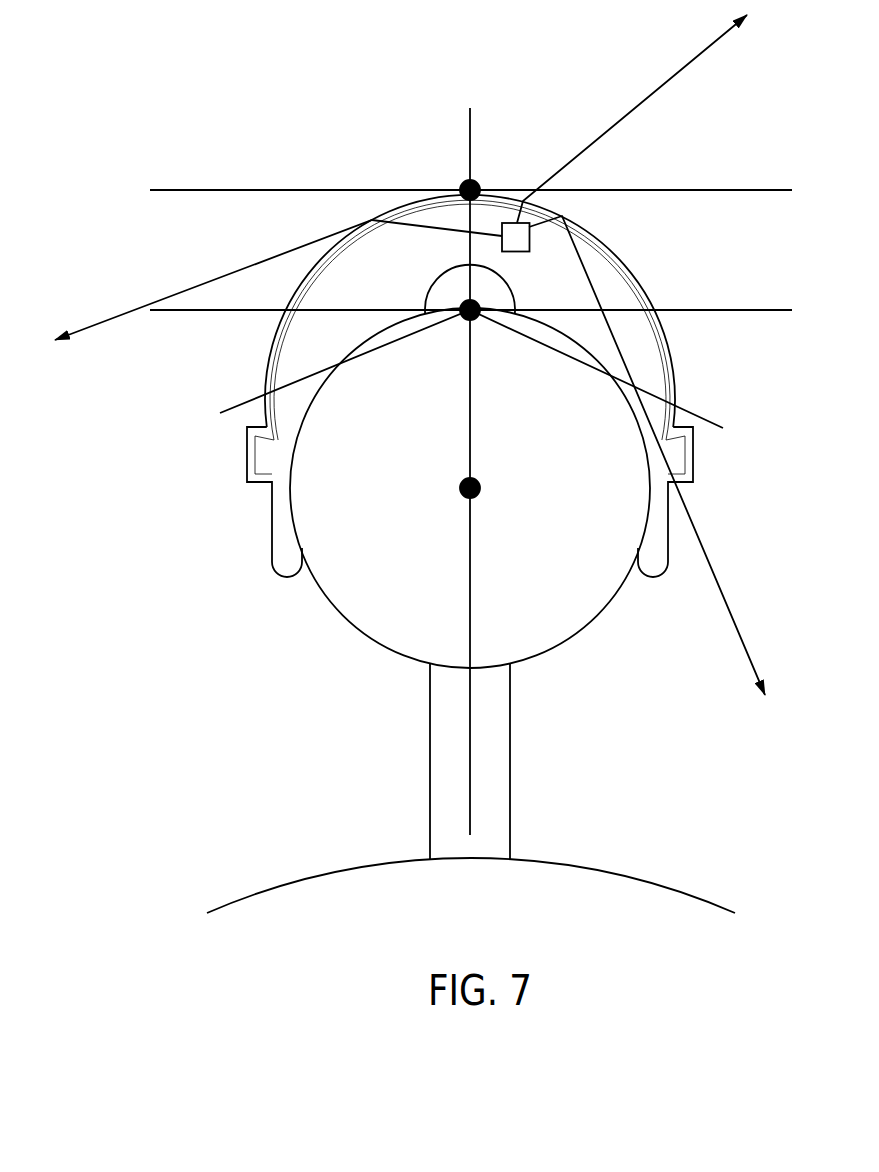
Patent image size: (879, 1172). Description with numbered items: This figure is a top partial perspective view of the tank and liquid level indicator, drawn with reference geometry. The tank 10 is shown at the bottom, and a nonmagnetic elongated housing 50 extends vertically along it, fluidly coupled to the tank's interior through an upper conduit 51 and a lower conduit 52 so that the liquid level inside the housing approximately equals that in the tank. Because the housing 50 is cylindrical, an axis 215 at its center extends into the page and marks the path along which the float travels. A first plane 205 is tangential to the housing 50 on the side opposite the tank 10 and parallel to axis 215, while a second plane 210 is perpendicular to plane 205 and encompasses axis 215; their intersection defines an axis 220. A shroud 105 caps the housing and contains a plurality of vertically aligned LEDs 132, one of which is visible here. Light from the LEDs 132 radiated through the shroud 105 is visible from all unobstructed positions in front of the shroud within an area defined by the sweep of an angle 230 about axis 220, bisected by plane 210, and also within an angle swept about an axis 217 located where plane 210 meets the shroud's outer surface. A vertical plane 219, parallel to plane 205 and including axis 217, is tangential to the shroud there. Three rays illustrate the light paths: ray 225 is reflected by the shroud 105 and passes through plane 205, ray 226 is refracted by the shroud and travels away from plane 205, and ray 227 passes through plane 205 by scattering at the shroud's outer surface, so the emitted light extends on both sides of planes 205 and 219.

The tank 10 is at (277, 885).
The nonmagnetic elongated housing 50 is at (582, 628).
The upper conduit 51 is at (426, 761).
The lower conduit 52 is at (430, 770).
The shroud 105 is at (662, 320).
The LEDs 132 is at (523, 222).
The first plane 205 is at (222, 311).
The second plane 210 is at (475, 143).
The axis 215 is at (480, 490).
The axis 217 is at (462, 183).
The vertical plane 219 is at (298, 188).
The axis 220 is at (468, 322).
The ray 225 is at (723, 587).
The ray 226 is at (672, 78).
The ray 227 is at (115, 315).
The angle 230 is at (513, 285).